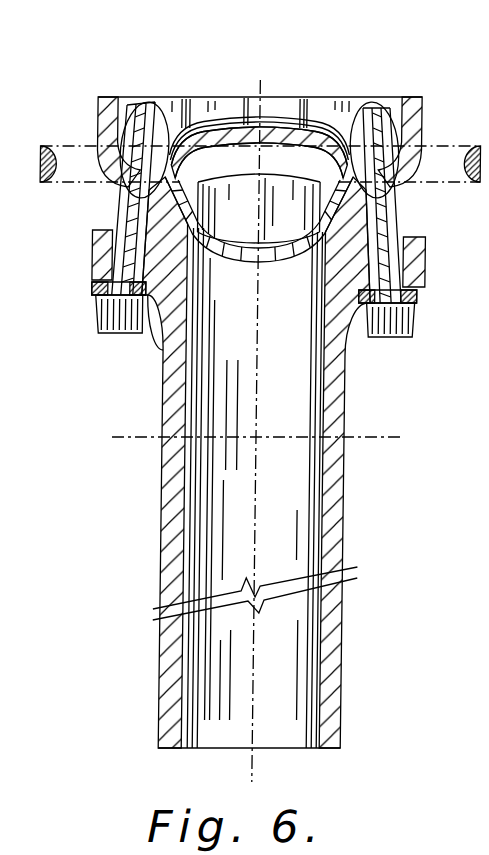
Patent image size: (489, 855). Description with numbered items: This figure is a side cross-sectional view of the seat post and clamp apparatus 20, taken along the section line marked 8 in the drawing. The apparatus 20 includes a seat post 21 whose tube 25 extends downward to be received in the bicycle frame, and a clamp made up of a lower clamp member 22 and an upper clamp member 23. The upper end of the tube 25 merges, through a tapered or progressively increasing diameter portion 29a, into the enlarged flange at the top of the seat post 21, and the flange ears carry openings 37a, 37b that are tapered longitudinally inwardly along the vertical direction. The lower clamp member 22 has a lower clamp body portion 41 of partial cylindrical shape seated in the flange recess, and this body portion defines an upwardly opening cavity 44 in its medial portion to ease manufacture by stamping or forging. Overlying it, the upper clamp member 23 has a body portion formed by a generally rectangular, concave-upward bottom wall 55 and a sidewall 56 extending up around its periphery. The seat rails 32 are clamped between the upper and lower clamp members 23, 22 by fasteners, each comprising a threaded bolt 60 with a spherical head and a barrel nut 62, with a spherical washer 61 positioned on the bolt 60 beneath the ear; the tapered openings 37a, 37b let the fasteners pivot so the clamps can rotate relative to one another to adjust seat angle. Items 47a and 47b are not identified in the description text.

The section line 8- 8 is at (123, 460).
The apparatus 20 is at (313, 66).
The seat post 21 is at (152, 582).
The lower clamp member 22 is at (311, 158).
The upper clamp member 23 is at (179, 84).
The tube 25 is at (345, 546).
The progressively increasing diameter portion 29a is at (152, 318).
The seat rails 32 is at (74, 146).
The opening 37a is at (107, 237).
The opening 37b is at (428, 240).
The lower clamp body portion 41 is at (294, 200).
The cavity 44 is at (220, 210).
The threaded stud 47a is at (137, 200).
The threaded stud 47b is at (374, 205).
The bottom wall 55 is at (253, 94).
The sidewall 56 is at (216, 108).
The threaded bolt 60 is at (94, 333).
The spherical washer 61 is at (95, 292).
The barrel nut 62 is at (114, 127).